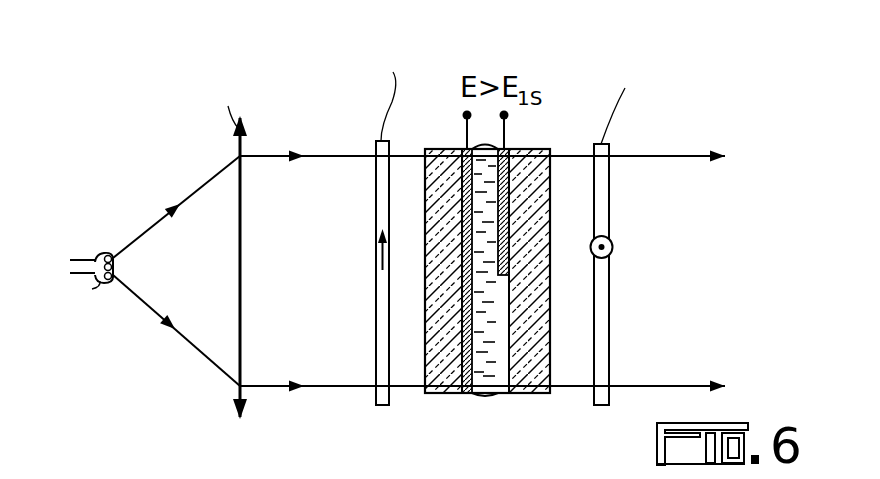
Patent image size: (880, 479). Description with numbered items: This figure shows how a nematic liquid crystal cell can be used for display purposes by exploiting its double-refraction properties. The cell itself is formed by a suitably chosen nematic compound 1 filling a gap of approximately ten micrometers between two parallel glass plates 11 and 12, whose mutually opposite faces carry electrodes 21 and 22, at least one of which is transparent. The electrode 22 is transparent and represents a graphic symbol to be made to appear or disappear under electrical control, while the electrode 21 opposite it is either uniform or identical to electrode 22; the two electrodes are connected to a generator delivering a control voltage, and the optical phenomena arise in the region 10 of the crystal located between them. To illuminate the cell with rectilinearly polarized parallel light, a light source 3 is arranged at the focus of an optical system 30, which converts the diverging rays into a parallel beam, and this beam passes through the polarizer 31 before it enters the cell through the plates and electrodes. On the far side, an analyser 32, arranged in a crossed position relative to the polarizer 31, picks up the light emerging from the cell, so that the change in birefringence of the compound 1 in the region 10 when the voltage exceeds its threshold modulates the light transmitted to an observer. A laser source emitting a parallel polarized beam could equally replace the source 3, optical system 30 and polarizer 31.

The source 3 is at (112, 252).
The optical system 30 is at (237, 152).
The polarizer 31 is at (377, 146).
The region between the two electrodes 10 is at (545, 213).
The glass plate 11 is at (450, 372).
The glass plate 12 is at (525, 373).
The electrode 21 is at (460, 174).
The electrode 22 is at (510, 175).
The compound 1 is at (490, 378).
The analyser 32 is at (602, 170).